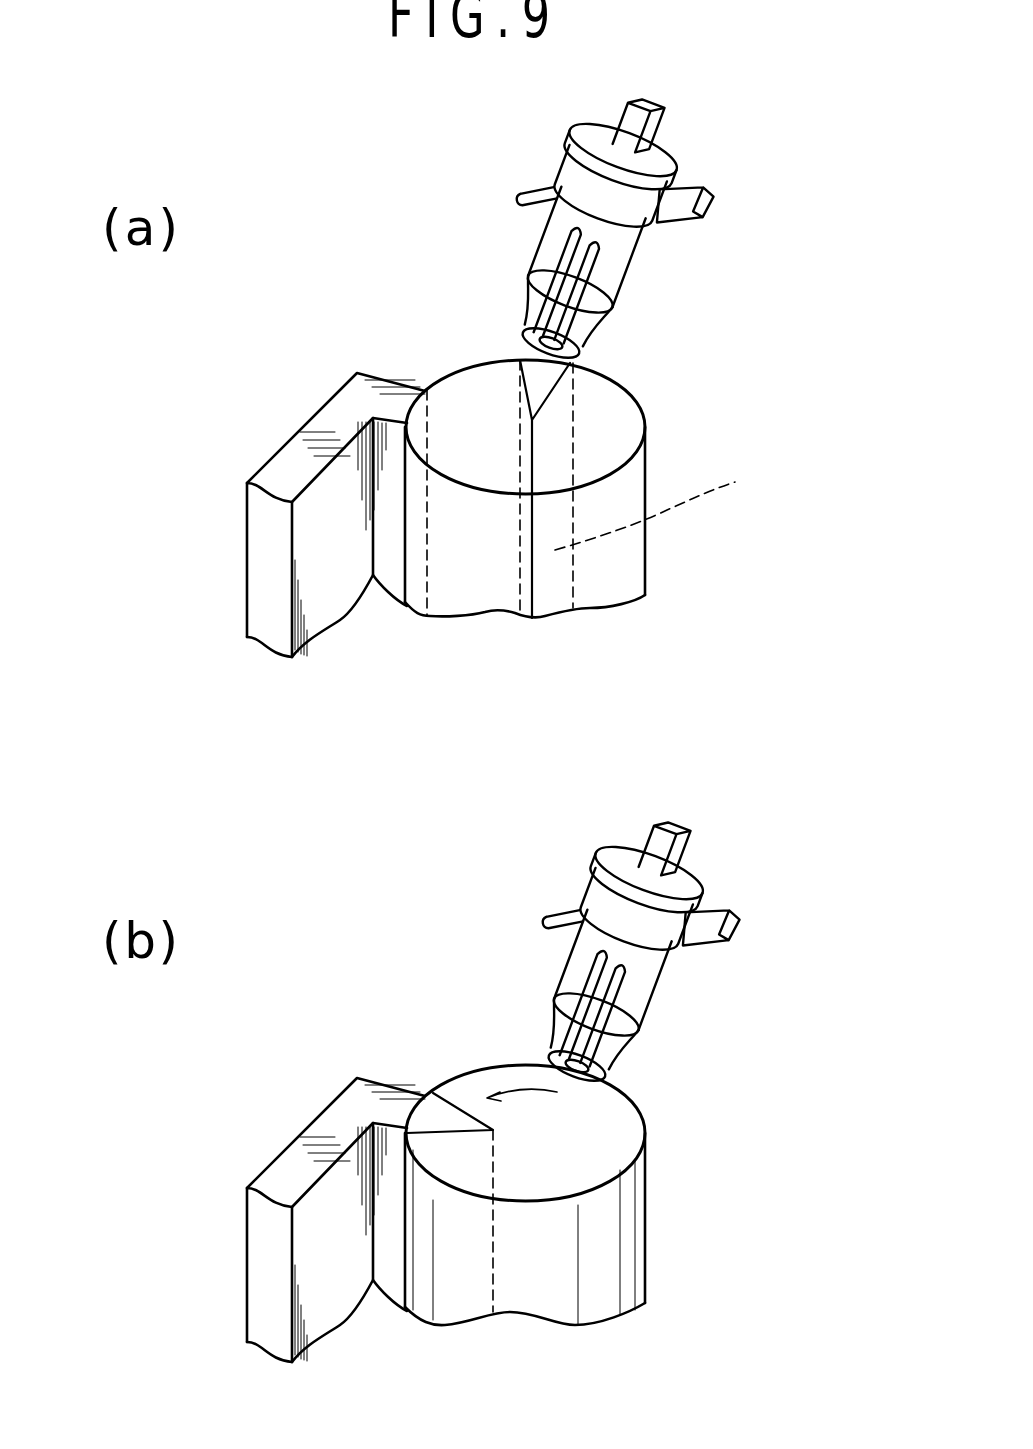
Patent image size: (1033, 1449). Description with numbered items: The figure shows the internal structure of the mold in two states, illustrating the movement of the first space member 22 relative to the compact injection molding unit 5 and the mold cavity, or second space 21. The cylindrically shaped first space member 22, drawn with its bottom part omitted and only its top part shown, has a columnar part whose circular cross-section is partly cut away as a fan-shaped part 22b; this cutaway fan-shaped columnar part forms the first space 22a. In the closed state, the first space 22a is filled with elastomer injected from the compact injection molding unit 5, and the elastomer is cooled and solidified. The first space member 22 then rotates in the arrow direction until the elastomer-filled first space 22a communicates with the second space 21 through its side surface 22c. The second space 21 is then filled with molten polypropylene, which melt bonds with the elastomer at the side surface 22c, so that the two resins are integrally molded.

The compact injection molding unit 5 is at (668, 150).
The mold cavity (second space) 21 is at (225, 423).
The first space member 22 is at (623, 577).
The first space 22a is at (563, 437).
The fan-shaped part 22b is at (543, 385).
The side surface 22c is at (672, 504).